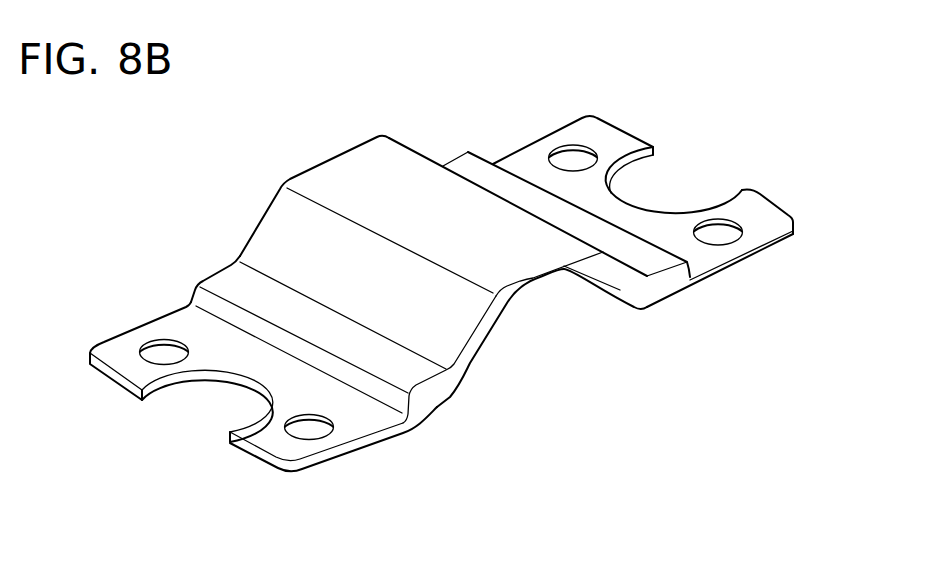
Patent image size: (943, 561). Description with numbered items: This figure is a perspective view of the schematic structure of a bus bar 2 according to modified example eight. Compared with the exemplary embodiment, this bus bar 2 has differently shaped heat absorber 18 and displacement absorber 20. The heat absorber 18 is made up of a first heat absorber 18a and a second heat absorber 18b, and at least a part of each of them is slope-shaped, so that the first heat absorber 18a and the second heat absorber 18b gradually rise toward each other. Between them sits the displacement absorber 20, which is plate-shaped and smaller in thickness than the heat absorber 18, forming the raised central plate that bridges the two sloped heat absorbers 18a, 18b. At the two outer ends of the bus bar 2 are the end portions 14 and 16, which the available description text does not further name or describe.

The bus bar 2 is at (502, 534).
The first flange portion 14 is at (107, 339).
The second flange portion 16 is at (589, 114).
The heat absorber 18 is at (475, 306).
The first heat absorber 18a is at (477, 347).
The second heat absorber 18b is at (623, 283).
The displacement absorber 20 is at (342, 155).